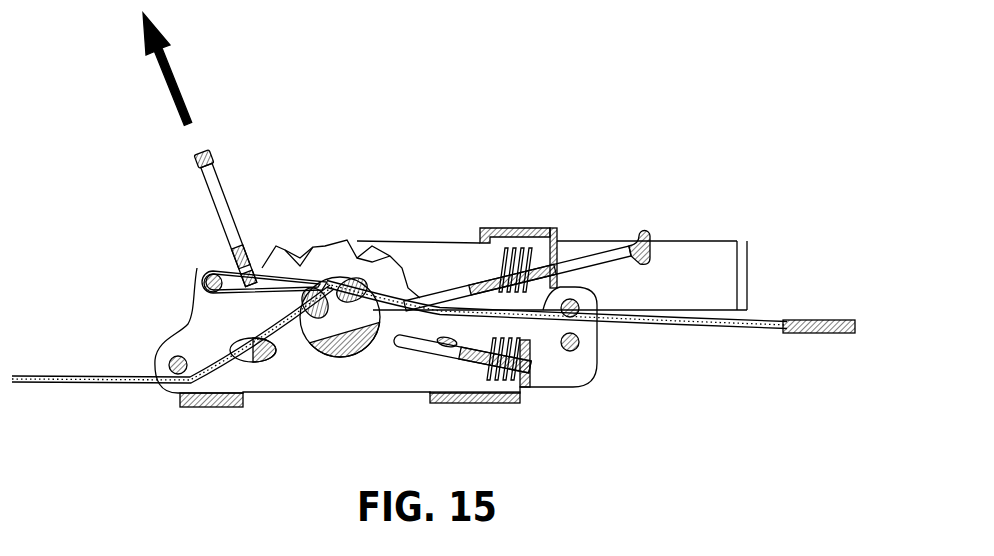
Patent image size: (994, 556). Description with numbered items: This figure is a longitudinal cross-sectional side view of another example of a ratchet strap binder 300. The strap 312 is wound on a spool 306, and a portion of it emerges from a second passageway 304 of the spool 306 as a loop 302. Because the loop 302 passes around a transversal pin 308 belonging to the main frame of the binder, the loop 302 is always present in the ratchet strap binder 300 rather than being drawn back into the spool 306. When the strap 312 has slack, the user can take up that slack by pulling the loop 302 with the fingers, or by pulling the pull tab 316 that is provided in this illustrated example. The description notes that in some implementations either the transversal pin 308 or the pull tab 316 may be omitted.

The ratchet strap binder 300 is at (334, 158).
The loop 302 is at (207, 268).
The second passageway 304 is at (333, 278).
The spool 306 is at (340, 349).
The transversal pin 308 is at (212, 281).
The strap 312 is at (67, 383).
The pull tab 316 is at (197, 164).